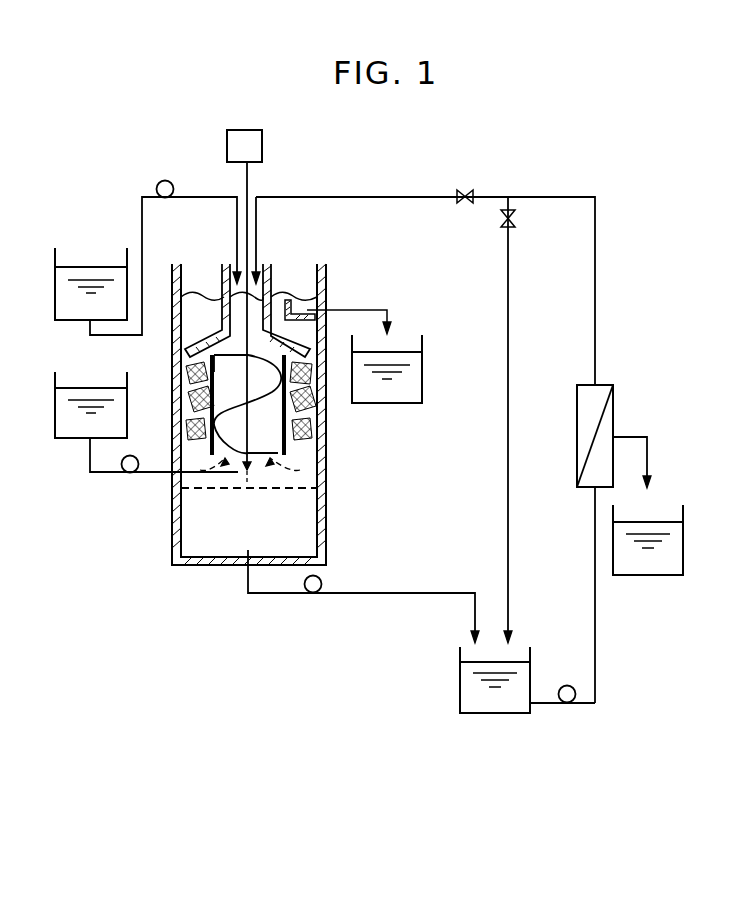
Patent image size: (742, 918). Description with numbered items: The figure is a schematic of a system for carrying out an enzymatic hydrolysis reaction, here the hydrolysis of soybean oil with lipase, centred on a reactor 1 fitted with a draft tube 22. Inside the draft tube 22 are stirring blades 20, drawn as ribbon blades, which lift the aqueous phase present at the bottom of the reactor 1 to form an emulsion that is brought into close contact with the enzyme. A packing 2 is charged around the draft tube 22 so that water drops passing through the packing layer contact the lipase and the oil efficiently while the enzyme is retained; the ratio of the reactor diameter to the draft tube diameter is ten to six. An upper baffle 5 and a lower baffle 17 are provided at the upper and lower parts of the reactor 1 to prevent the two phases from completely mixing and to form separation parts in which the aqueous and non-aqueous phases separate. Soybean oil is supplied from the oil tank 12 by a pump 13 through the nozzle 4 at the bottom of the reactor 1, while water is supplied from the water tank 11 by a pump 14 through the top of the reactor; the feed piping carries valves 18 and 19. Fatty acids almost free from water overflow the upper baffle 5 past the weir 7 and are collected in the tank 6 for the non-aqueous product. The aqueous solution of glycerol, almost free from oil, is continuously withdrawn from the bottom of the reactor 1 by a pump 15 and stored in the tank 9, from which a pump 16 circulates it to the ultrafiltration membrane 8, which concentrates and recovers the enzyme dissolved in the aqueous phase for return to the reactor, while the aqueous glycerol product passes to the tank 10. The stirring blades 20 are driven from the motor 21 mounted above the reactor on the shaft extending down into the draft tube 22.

The reactor 1 is at (207, 565).
The packing 2 is at (318, 432).
The nozzle for supplying substrate 4 is at (255, 476).
The upper baffle 5 is at (272, 277).
The tank for product (non-aqueous solution phase) 6 is at (423, 383).
The weir 7 is at (322, 294).
The ultrafiltration membrane 8 is at (612, 388).
The tank for treating aqueous phase with membrane 9 is at (531, 665).
The tank for product (aqueous phase) 10 is at (648, 577).
The tank for substrate (aqueous phase) 11 is at (55, 267).
The tank for substrate (non-aqueous solution phase) 12 is at (55, 388).
The pump 13 is at (130, 473).
The pump 14 is at (165, 180).
The pump 15 is at (311, 595).
The pump 16 is at (566, 703).
The lower baffle 17 is at (282, 490).
The valve 18 is at (465, 190).
The valve 19 is at (515, 218).
The stirring blades 20 is at (305, 404).
The motor 21 is at (263, 143).
The draft tube 22 is at (312, 443).